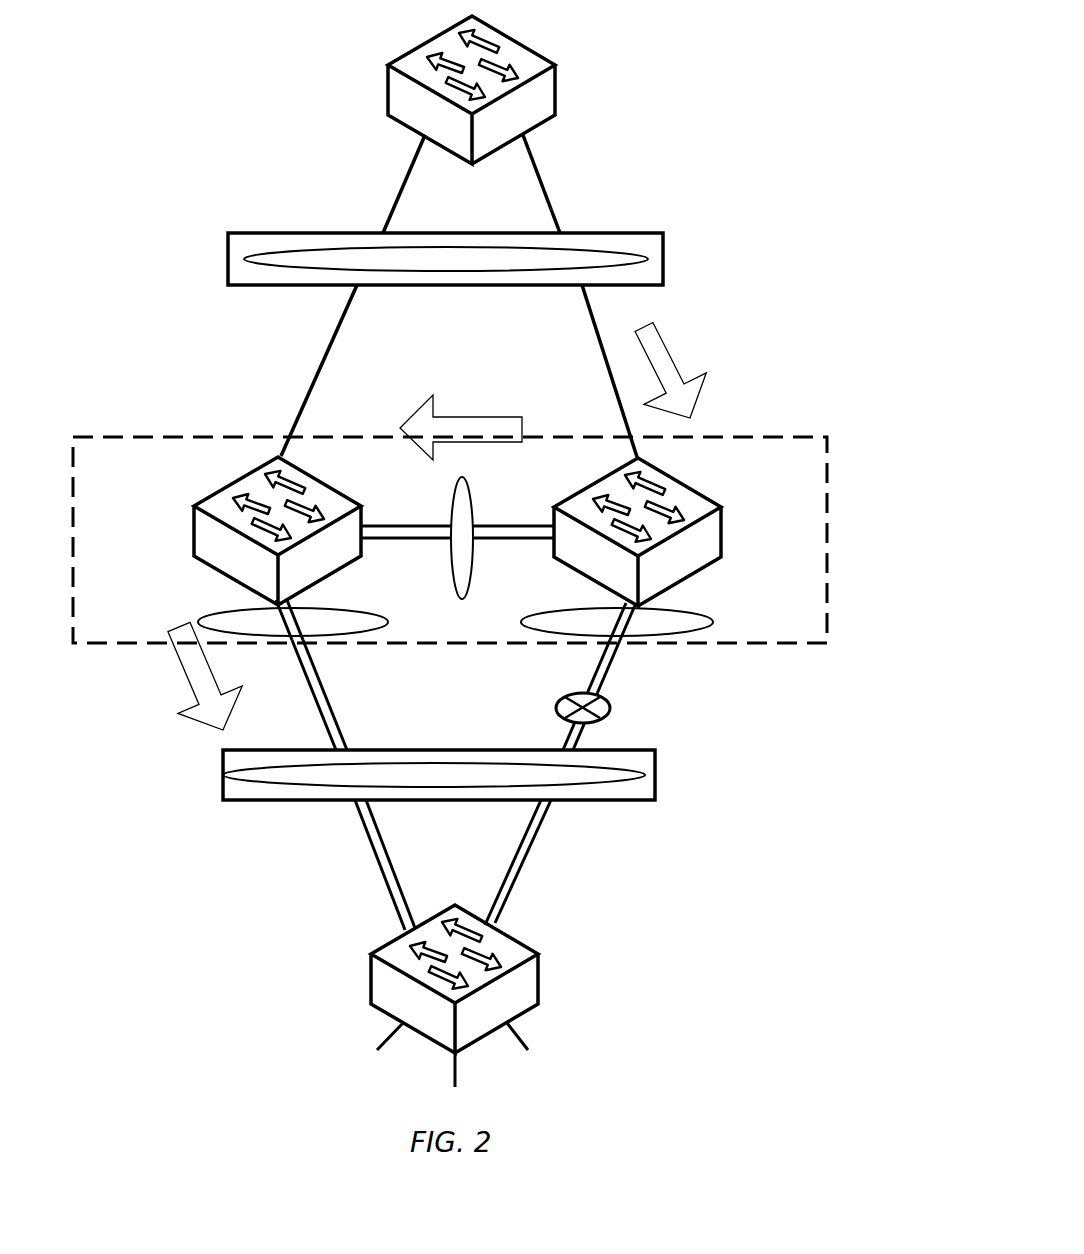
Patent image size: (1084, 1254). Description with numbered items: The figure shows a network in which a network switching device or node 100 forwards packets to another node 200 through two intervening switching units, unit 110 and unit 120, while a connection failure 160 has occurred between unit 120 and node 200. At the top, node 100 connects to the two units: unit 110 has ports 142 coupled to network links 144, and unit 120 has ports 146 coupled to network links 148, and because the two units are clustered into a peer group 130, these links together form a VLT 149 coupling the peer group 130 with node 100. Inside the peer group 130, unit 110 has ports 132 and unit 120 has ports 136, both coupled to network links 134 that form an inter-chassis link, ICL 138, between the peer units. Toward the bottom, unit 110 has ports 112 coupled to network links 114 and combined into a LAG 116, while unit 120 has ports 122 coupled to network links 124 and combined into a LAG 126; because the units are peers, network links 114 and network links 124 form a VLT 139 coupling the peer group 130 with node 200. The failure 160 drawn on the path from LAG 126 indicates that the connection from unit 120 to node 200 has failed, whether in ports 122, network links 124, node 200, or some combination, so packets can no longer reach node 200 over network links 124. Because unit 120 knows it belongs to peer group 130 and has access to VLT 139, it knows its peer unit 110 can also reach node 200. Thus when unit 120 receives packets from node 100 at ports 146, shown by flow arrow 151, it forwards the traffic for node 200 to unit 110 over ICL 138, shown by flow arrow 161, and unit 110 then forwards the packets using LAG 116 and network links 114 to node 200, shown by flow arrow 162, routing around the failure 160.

The node 100 is at (523, 90).
The network links 144 is at (402, 190).
The network links 148 is at (545, 175).
The VLT 149 is at (445, 259).
The ports 142 is at (278, 457).
The ports 146 is at (641, 460).
The flow arrow 151 is at (668, 348).
The flow arrow 161 is at (460, 417).
The peer group 130 is at (828, 556).
The unit 110 is at (232, 531).
The unit 120 is at (683, 532).
The ports 132 is at (365, 520).
The network links 134 is at (415, 542).
The ports 136 is at (555, 520).
The inter-chassis link (ICL) 138 is at (470, 585).
The ports 112 is at (270, 600).
The link aggregation group (LAG) 116 is at (293, 622).
The network links 114 is at (313, 697).
The ports 122 is at (640, 605).
The LAG 126 is at (617, 622).
The network links 124 is at (523, 860).
The connection failure 160 is at (612, 710).
The VLT 139 is at (439, 775).
The flow arrow 162 is at (178, 655).
The node 200 is at (514, 996).